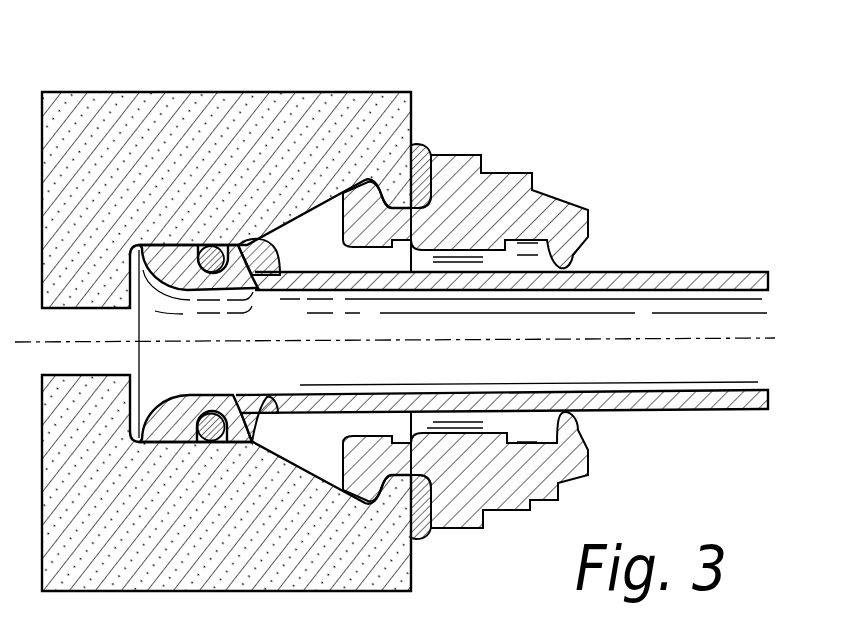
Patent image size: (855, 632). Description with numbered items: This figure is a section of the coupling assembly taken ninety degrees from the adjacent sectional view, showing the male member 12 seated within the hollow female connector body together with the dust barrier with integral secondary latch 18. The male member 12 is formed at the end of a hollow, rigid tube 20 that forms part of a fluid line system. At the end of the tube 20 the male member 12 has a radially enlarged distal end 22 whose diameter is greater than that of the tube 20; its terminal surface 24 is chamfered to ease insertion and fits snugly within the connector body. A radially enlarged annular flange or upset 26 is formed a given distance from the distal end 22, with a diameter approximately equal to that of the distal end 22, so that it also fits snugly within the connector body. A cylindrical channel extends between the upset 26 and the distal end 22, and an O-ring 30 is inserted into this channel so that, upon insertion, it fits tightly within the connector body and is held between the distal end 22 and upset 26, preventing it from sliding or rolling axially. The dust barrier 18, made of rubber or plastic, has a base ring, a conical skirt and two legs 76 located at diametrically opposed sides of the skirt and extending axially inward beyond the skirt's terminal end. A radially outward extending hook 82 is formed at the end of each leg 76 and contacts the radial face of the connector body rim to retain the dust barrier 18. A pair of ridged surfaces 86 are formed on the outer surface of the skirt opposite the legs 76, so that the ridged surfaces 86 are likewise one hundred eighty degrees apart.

The male member 12 is at (283, 271).
The dust barrier with integral secondary latch 18 is at (567, 191).
The tube 20 is at (726, 272).
The distal end 22 is at (165, 245).
The terminal surface 24 is at (142, 245).
The upset 26 is at (257, 242).
The O-ring 30 is at (211, 247).
The legs 76 is at (372, 250).
The hook 82 is at (413, 117).
The ridged surfaces 86 is at (467, 152).